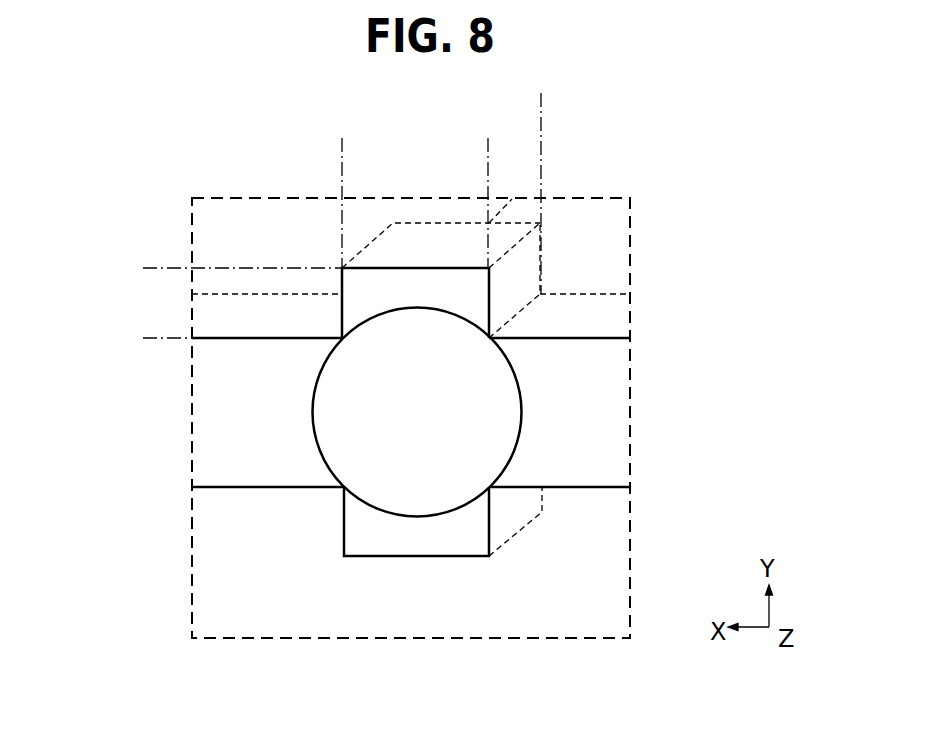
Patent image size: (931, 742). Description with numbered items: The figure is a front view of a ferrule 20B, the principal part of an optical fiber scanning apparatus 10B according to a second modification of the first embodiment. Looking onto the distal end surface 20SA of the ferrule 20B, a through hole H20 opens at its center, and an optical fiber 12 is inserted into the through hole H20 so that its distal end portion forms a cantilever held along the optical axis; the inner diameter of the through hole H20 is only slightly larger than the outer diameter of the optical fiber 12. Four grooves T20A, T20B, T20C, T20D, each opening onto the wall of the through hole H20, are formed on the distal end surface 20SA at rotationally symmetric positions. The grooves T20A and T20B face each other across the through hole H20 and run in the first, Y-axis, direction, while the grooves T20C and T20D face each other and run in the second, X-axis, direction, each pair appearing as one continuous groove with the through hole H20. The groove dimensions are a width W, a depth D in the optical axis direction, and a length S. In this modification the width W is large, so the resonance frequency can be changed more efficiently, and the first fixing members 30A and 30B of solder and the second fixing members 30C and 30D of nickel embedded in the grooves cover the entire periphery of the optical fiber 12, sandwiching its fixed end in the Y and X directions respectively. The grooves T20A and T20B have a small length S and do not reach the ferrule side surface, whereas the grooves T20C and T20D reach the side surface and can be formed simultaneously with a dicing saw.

The optical fiber scanning apparatus 10B is at (100, 204).
The optical fiber 12 is at (313, 420).
The ferrule 20B is at (631, 308).
The distal end surface 20SA is at (523, 612).
The first fixing member 30A is at (490, 294).
The first fixing member 30B is at (344, 540).
The second fixing member 30C is at (247, 487).
The second fixing member 30D is at (568, 337).
The through hole H20 is at (500, 427).
The groove T20A is at (425, 250).
The groove T20B is at (435, 560).
The groove T20C is at (184, 464).
The groove T20D is at (641, 410).
The width W is at (478, 171).
The depth D is at (488, 171).
The length S is at (161, 278).